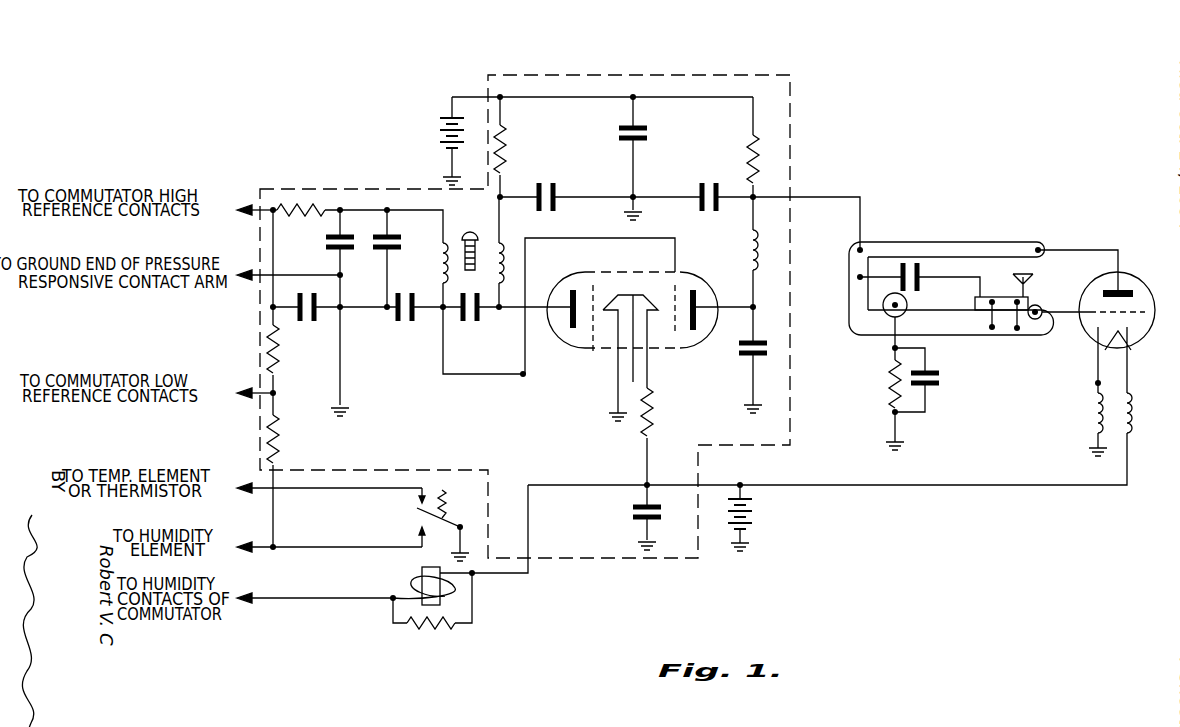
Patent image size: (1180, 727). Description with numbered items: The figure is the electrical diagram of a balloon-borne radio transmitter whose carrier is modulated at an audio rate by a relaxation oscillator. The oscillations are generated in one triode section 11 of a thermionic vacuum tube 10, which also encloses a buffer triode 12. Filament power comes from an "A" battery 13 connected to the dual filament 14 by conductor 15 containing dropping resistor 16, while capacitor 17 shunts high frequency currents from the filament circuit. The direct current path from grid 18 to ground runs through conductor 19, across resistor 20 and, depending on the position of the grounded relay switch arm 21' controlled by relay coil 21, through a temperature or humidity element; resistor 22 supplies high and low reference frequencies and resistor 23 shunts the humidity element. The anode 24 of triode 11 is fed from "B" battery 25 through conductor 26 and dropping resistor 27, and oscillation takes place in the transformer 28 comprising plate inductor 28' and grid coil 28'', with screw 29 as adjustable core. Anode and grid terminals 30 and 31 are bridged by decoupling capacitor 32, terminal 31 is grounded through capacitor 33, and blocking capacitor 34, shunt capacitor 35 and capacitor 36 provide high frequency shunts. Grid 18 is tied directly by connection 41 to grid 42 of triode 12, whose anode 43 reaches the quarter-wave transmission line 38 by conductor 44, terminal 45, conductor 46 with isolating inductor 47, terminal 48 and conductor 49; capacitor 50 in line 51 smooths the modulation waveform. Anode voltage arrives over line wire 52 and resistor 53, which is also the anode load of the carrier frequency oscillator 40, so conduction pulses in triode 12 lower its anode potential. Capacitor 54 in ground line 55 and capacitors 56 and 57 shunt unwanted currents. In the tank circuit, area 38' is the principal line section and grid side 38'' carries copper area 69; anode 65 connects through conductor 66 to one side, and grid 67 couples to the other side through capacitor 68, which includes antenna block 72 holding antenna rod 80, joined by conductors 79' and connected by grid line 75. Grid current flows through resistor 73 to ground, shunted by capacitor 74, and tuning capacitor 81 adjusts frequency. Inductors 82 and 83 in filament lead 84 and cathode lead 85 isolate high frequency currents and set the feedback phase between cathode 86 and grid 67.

The thermionic vacuum tube 10 is at (626, 332).
The triode section 11 is at (562, 303).
The buffer triode 12 is at (714, 303).
The "A" battery 13 is at (757, 511).
The dual filament 14 is at (640, 296).
The conductor 15 is at (650, 460).
The dropping resistor 16 is at (655, 415).
The capacitor 17 is at (630, 517).
The grid 18 is at (595, 310).
The conductor 19 is at (472, 376).
The resistor 20 is at (302, 216).
The relay coil 21 is at (459, 557).
The relay switch arm 21' is at (453, 524).
The resistor 22 is at (279, 350).
The resistor 23 is at (279, 440).
The anode 24 is at (570, 322).
The "B" battery 25 is at (450, 120).
The conductor 26 is at (503, 119).
The dropping resistor 27 is at (505, 150).
The auxiliary frequency oscillation transformer 28 is at (474, 252).
The plate inductor 28' is at (517, 252).
The grid coil 28'' is at (430, 275).
The screw 29 is at (467, 230).
The anode terminal 30 is at (501, 309).
The grid terminal 31 is at (441, 303).
The decoupling capacitor 32 is at (470, 322).
The radio frequency shunt capacitor 33 is at (398, 312).
The blocking capacitor 34 is at (398, 236).
The radio frequency shunt capacitor 35 is at (350, 252).
The capacitor 36 is at (312, 320).
The quarter-wave tuned resonant transmission line 38 is at (951, 286).
The area 38' is at (955, 230).
The grid side 38'' is at (957, 339).
The carrier frequency oscillator 40 is at (1127, 309).
The direct circuit connection 41 is at (600, 238).
The grid 42 is at (680, 290).
The anode 43 is at (695, 322).
The conductor 44 is at (722, 305).
The terminal 45 is at (755, 306).
The conductor 46 is at (756, 232).
The inductor 47 is at (756, 268).
The terminal 48 is at (755, 198).
The conductor 49 is at (830, 197).
The capacitor 50 is at (756, 400).
The line 51 is at (755, 340).
The line wire 52 is at (569, 98).
The resistor 53 is at (758, 150).
The capacitor 54 is at (556, 187).
The ground line 55 is at (580, 200).
The capacitor 56 is at (640, 141).
The capacitor 57 is at (716, 185).
The anode 65 is at (1125, 290).
The conductor 66 is at (1080, 248).
The grid 67 is at (1140, 312).
The capacitor 68 is at (1043, 308).
The copper area 69 is at (908, 305).
The antenna block 72 is at (998, 297).
The resistor 73 is at (890, 380).
The capacitor 74 is at (940, 387).
The grid line 75 is at (1068, 314).
The conductors 79' is at (1035, 335).
The antenna rod 80 is at (1030, 280).
The tuning capacitor 81 is at (902, 285).
The inductor 82 is at (1092, 408).
The inductor 83 is at (1133, 410).
The filament lead 84 is at (1130, 465).
The cathode lead 85 is at (1096, 365).
The cathode 86 is at (1135, 345).